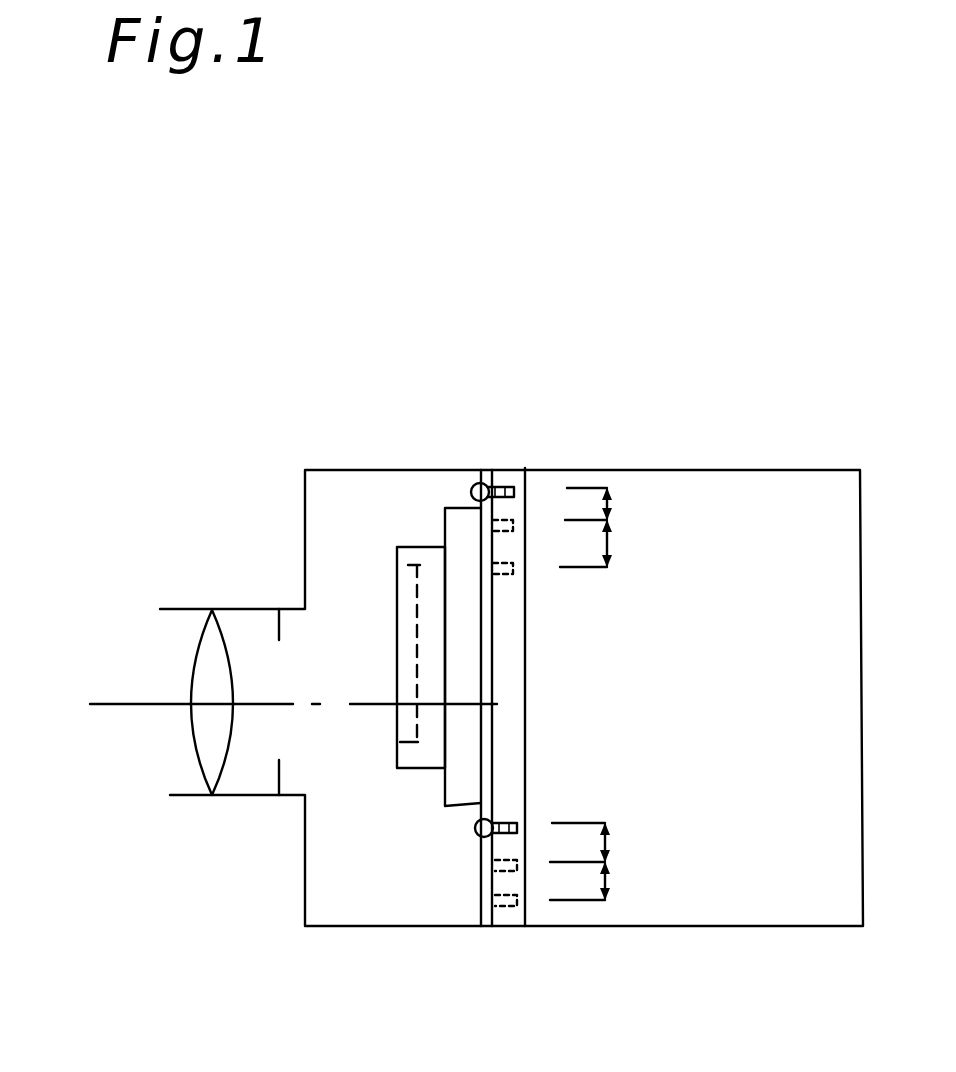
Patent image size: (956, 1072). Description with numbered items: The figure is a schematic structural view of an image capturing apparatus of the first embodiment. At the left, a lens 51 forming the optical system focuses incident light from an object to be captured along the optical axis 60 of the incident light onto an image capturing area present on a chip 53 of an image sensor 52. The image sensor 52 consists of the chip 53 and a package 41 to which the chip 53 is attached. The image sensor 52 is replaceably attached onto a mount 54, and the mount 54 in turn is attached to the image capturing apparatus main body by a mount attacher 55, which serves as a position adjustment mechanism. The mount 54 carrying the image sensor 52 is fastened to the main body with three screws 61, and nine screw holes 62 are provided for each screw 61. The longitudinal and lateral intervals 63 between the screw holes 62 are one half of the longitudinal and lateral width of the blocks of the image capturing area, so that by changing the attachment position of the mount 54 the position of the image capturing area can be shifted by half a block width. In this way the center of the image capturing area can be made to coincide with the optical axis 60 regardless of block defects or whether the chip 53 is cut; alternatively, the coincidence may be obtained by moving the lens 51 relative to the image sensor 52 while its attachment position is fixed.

The package 41 is at (412, 758).
The lens 51 is at (190, 683).
The image sensor 52 is at (405, 547).
The chip 53 is at (410, 690).
The mount 54 is at (445, 507).
The mount attacher 55 is at (513, 912).
The optical axis 60 is at (133, 705).
The screw 61 is at (477, 487).
The screw hole 62 is at (508, 538).
The interval 63 is at (620, 505).